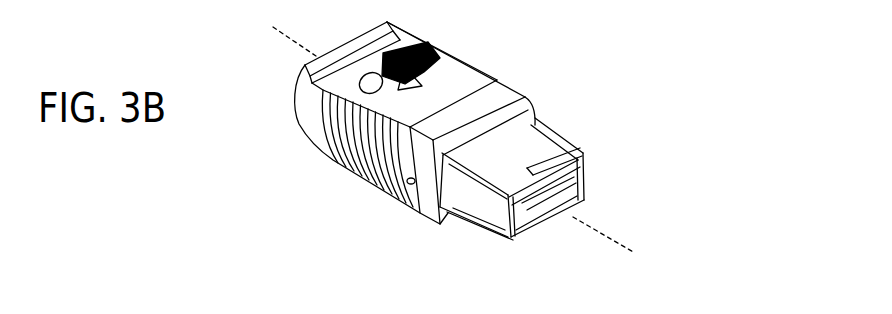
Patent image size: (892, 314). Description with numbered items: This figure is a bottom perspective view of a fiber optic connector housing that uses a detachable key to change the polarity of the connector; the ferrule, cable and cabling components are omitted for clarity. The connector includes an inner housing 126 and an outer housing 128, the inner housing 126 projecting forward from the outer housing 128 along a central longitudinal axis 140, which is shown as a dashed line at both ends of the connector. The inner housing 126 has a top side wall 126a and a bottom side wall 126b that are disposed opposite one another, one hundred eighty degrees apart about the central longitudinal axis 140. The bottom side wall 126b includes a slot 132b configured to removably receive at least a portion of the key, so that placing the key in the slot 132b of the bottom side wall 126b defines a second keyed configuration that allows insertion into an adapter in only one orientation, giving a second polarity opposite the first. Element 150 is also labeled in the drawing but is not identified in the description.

The inner housing 126 is at (310, 118).
The top side wall 126a is at (516, 240).
The bottom side wall 126b is at (567, 145).
The outer housing 128 is at (448, 58).
The slot 132b is at (539, 165).
The central longitudinal axis 140 is at (273, 28).
The bottom bar of plug connector 150 is at (547, 226).